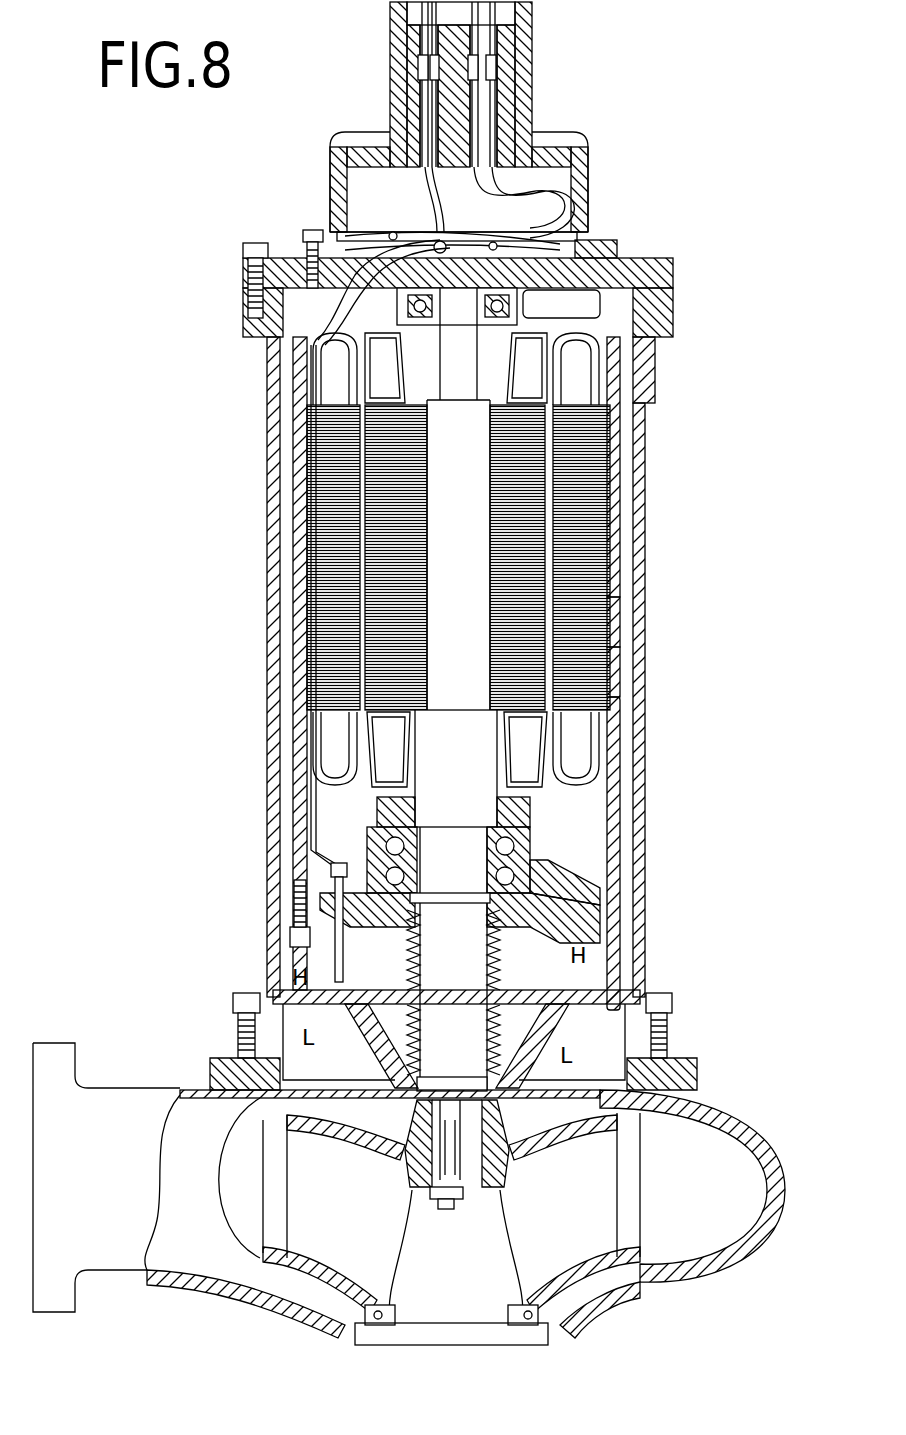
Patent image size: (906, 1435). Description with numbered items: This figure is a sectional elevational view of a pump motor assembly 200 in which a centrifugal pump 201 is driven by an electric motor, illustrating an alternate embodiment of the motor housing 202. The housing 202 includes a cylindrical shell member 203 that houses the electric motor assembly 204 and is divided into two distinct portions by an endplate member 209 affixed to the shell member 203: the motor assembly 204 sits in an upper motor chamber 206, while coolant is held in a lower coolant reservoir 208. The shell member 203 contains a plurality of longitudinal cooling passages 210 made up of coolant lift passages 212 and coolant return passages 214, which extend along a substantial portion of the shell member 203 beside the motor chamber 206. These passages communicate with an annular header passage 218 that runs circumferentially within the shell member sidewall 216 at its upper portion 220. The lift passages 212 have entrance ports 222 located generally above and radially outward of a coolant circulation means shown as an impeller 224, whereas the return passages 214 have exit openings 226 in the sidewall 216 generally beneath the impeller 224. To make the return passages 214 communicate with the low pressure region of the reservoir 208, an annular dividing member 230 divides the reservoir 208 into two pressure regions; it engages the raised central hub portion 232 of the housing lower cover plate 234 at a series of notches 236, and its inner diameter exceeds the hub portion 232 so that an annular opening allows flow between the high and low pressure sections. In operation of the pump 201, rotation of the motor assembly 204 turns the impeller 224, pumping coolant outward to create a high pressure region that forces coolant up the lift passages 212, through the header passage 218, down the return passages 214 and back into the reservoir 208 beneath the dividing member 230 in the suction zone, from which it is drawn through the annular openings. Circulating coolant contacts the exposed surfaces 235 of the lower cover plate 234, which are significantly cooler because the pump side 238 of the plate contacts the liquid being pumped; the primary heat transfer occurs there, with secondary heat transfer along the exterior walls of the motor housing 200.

The pump motor assembly 200 is at (250, 447).
The pump 201 is at (128, 1092).
The motor housing 202 is at (648, 483).
The cylindrical shell member 203 is at (648, 598).
The electric motor assembly 204 is at (590, 553).
The upper motor chamber 206 is at (590, 795).
The lower coolant reservoir 208 is at (585, 970).
The endplate member 209 is at (572, 906).
The longitudinal cooling passages 210 is at (628, 690).
The coolant lift passages 212 is at (284, 752).
The coolant return passages 214 is at (625, 748).
The shell member sidewall 216 is at (640, 635).
The annular header passage 218 is at (285, 370).
The upper portion 220 is at (648, 420).
The entrance ports 222 is at (273, 930).
The impeller 224 is at (404, 974).
The exit openings 226 is at (627, 1008).
The annular dividing member 230 is at (277, 992).
The raised central hub portion 232 is at (357, 1074).
The lower cover plate 234 is at (668, 1072).
The exposed surfaces 235 is at (728, 1107).
The notches 236 is at (248, 984).
The pump side 238 is at (566, 1107).